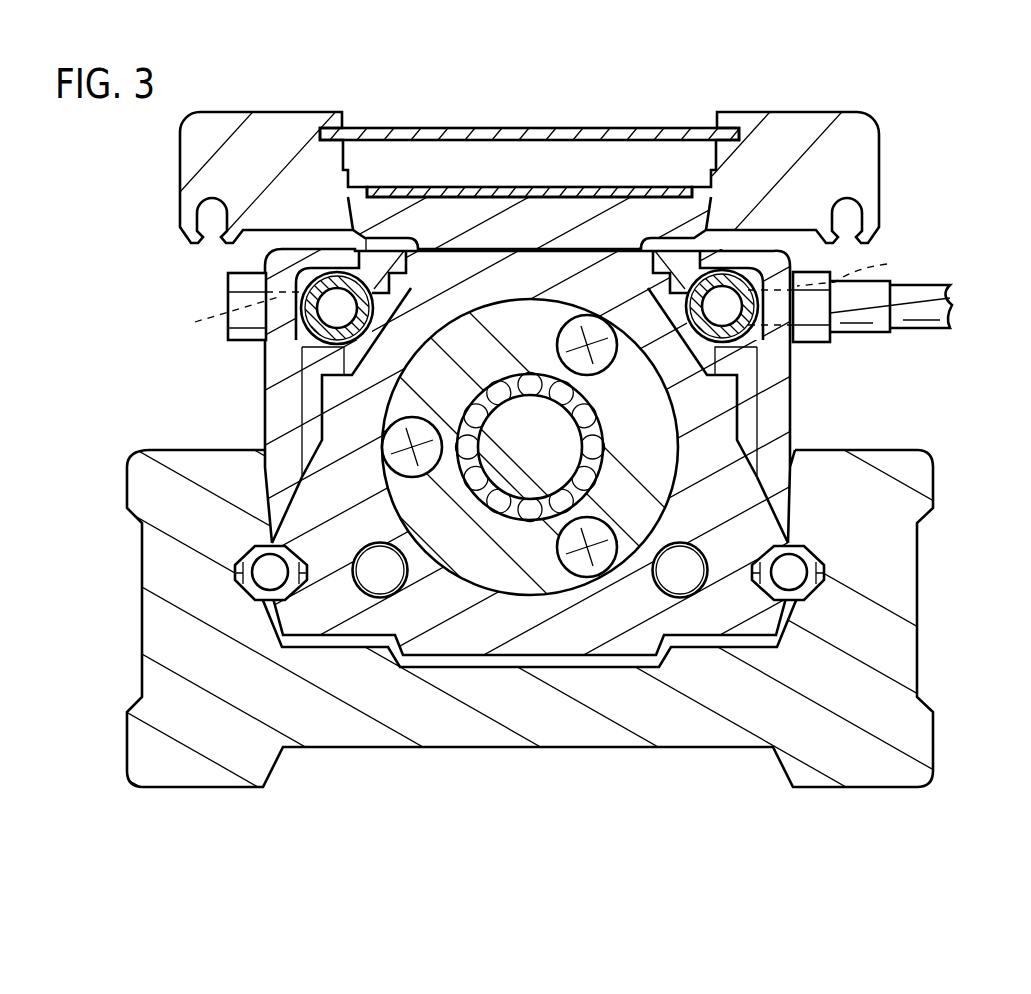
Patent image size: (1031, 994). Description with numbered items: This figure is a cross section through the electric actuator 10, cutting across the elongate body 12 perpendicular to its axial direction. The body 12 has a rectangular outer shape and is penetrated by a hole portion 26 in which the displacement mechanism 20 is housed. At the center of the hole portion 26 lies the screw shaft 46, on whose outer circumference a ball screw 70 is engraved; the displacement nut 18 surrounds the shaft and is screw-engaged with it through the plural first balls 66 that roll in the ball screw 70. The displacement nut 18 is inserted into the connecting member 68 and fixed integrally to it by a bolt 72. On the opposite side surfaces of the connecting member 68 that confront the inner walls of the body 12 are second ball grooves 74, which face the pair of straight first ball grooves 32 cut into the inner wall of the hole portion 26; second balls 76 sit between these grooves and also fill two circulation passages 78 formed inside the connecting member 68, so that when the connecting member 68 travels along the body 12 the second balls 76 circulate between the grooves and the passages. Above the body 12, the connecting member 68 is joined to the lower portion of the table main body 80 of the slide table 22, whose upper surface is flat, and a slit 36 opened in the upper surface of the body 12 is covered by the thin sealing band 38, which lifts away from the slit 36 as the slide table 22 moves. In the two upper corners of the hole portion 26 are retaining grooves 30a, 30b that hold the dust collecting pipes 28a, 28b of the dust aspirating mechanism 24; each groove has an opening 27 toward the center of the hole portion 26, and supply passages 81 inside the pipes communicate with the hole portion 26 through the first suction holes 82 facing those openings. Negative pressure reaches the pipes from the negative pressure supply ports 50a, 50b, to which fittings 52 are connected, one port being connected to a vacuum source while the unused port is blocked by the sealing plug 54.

The electric actuator 10 is at (802, 86).
The body 12 is at (935, 463).
The displacement nut 18 is at (474, 567).
The displacement mechanism 20 is at (743, 453).
The slide table 22 is at (866, 120).
The dust aspirating mechanism 24 is at (767, 270).
The hole portion 26 is at (320, 627).
The openings 27 is at (383, 322).
The dust collecting pipe 28a is at (752, 328).
The dust collecting pipe 28b is at (325, 322).
The retaining groove 30a is at (745, 270).
The retaining groove 30b is at (313, 274).
The first ball grooves 32 is at (262, 600).
The slit 36 is at (418, 256).
The sealing band 38 is at (513, 187).
The screw shaft 46 is at (537, 462).
The negative pressure supply port 50a is at (838, 286).
The negative pressure supply port 50b is at (227, 315).
The fittings 52 is at (955, 302).
The sealing plug 54 is at (235, 282).
The first balls 66 is at (495, 388).
The connecting member 68 is at (612, 640).
The ball screw 70 is at (470, 510).
The bolt 72 is at (382, 445).
The second ball grooves 74 is at (272, 545).
The second balls 76 is at (373, 580).
The circulation passages 78 is at (387, 537).
The table main body 80 is at (185, 160).
The supply passages 81 is at (265, 337).
The first suction holes 82 is at (400, 372).